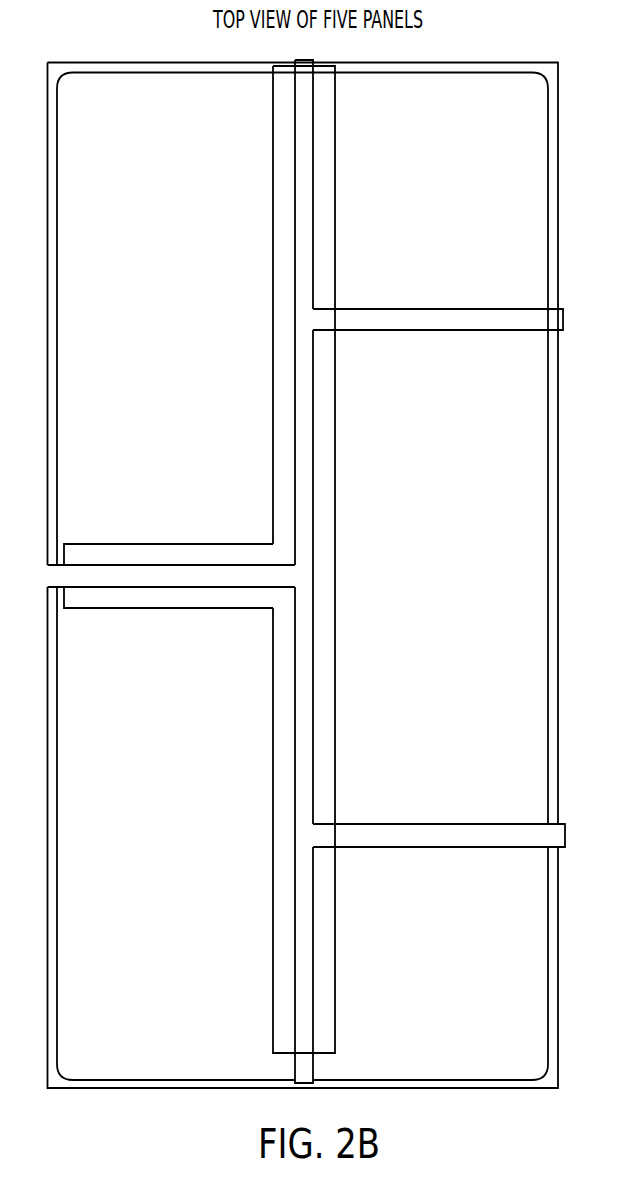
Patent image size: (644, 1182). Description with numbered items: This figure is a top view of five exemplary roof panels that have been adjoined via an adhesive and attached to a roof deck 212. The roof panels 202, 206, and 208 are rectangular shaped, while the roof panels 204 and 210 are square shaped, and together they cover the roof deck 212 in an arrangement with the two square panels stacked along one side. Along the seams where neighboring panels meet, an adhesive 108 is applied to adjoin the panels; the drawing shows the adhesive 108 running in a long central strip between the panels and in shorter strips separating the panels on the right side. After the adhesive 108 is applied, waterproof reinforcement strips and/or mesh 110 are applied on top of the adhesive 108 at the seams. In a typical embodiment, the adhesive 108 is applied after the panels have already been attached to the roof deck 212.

The adhesive 108 is at (309, 480).
The waterproof reinforcement strips and/or mesh 110 is at (67, 557).
The roof panel 202 is at (192, 336).
The roof panel 204 is at (442, 206).
The roof panel 206 is at (442, 590).
The roof panel 208 is at (196, 844).
The roof panel 210 is at (443, 974).
The roof deck 212 is at (557, 871).